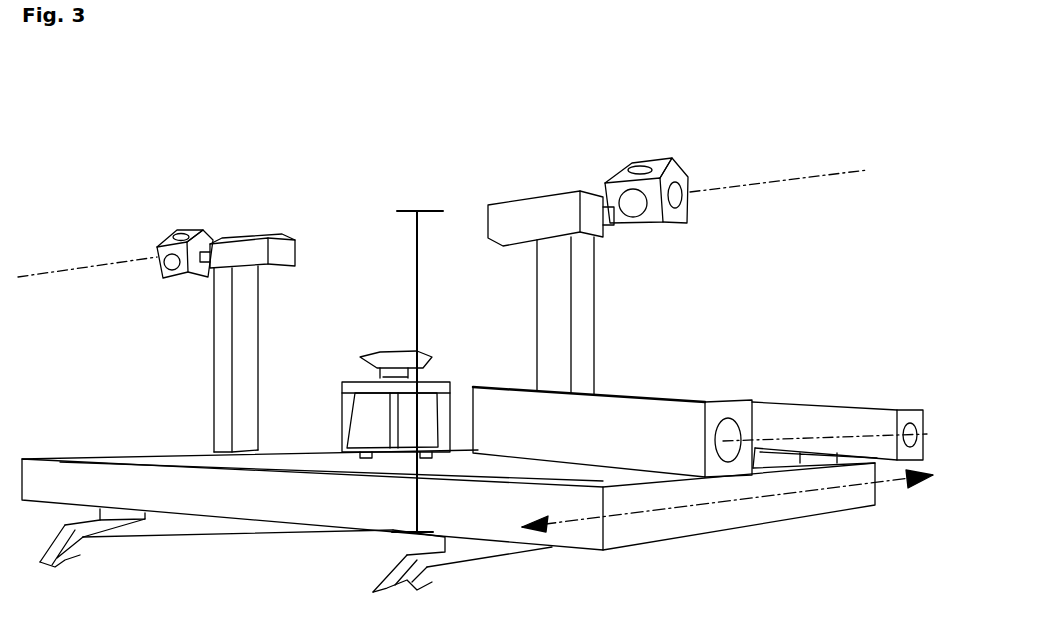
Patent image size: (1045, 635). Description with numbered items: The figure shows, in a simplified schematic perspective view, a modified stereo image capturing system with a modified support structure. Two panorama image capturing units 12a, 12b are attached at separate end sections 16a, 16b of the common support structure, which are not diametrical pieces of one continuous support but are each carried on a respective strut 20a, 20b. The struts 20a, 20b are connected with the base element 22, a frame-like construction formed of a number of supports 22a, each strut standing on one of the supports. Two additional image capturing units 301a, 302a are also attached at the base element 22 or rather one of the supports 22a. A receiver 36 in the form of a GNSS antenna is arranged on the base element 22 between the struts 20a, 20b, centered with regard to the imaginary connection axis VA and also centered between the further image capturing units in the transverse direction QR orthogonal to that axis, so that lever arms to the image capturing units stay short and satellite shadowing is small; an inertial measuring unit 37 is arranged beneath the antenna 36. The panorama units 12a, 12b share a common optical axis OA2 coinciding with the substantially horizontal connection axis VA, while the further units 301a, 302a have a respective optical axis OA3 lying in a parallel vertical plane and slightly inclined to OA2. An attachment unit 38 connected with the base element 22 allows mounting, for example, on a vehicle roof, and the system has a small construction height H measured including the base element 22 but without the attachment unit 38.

The panorama image capturing unit 12a is at (678, 158).
The panorama image capturing unit 12b is at (162, 230).
The end section 16a is at (523, 213).
The end section 16b is at (240, 248).
The strut 20a is at (550, 296).
The strut 20b is at (247, 312).
The base element 22 is at (108, 443).
The support 22a is at (185, 452).
The receiver 36 is at (392, 355).
The inertial measuring unit 37 is at (370, 412).
The attachment unit 38 is at (107, 527).
The further image capturing unit 301a is at (627, 427).
The further image capturing unit 302a is at (825, 420).
The optical axis OA2 is at (18, 277).
The optical axis OA3 is at (883, 432).
The imaginary connection axis VA is at (800, 178).
The transverse direction QR is at (803, 493).
The construction height H is at (419, 251).